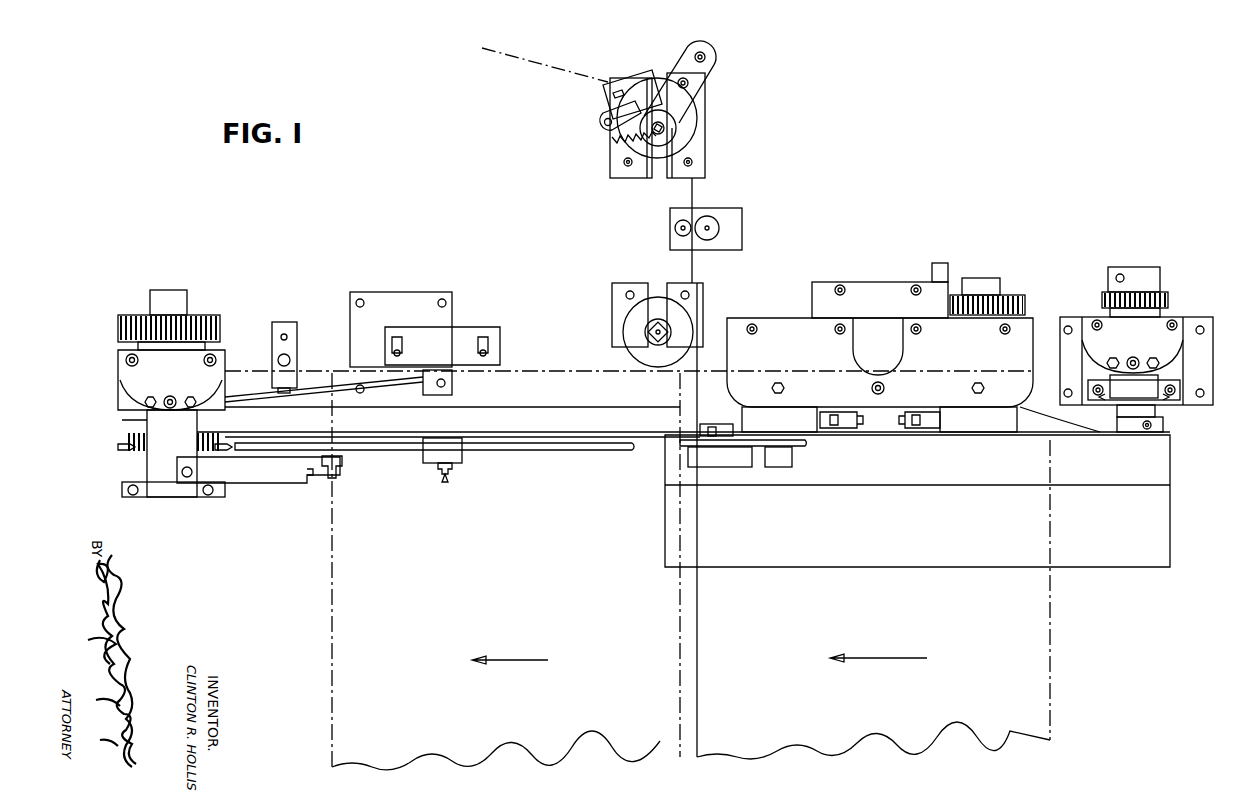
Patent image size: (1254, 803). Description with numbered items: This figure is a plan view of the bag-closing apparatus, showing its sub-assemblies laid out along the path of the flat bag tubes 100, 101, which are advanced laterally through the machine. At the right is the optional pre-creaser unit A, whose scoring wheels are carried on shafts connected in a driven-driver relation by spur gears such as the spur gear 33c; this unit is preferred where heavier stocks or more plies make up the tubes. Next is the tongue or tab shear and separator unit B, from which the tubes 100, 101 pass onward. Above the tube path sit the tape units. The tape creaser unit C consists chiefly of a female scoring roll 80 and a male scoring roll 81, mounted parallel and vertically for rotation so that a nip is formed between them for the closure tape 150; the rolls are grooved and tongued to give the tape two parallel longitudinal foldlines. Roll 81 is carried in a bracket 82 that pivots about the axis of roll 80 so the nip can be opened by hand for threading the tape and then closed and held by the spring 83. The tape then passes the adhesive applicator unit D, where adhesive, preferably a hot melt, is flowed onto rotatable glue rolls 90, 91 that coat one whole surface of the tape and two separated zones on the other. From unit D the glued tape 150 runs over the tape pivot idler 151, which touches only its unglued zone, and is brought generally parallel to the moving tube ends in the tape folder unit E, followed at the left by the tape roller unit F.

The closure tape 150 is at (528, 50).
The bracket 82 is at (706, 52).
The male scoring roll 81 is at (696, 88).
The tape creaser unit C is at (705, 116).
The female scoring roll 80 is at (677, 145).
The spring 83 is at (618, 136).
The adhesive applicator unit D is at (740, 218).
The glue roll 90 is at (675, 228).
The glue roll 91 is at (715, 218).
The tape pivot idler 151 is at (626, 325).
The tape folder unit E is at (318, 368).
The tape roller unit F is at (163, 290).
The tongue or tab shear and separator unit B is at (1028, 332).
The pre-creaser unit A is at (1177, 317).
The spur gear 33c is at (1098, 298).
The flat bag tube 100 is at (512, 622).
The flat bag tube 101 is at (880, 622).